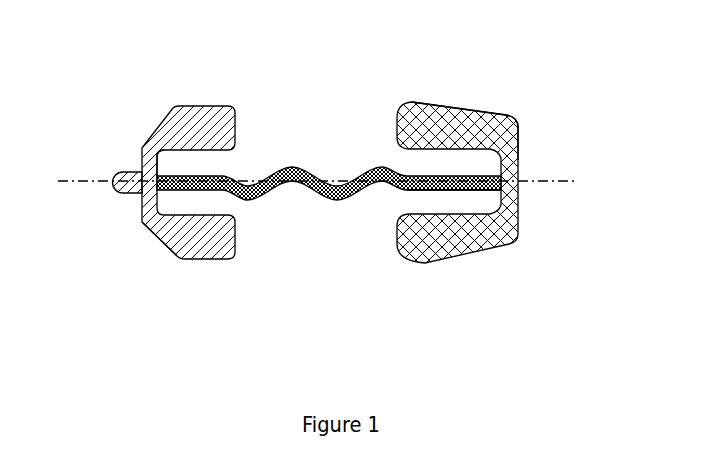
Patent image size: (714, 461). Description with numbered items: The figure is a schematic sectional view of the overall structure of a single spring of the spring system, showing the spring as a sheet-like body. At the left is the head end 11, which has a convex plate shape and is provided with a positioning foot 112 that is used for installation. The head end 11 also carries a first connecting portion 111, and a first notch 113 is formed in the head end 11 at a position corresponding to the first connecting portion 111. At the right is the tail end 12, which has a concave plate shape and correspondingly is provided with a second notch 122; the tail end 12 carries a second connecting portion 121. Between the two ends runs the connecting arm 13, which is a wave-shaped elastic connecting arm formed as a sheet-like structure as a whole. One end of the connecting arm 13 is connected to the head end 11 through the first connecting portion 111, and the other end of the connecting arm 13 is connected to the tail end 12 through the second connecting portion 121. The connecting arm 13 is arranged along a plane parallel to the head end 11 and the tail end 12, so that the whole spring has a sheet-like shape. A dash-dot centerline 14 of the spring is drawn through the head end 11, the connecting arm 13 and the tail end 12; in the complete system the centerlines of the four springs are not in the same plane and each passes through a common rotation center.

The head end 11 is at (181, 142).
The first connecting portion 111 is at (197, 175).
The positioning foot 112 is at (118, 172).
The first notch 113 is at (150, 233).
The tail end 12 is at (490, 189).
The second connecting portion 121 is at (405, 189).
The second notch 122 is at (518, 130).
The connecting arm 13 is at (329, 250).
The centerline 14 is at (567, 177).